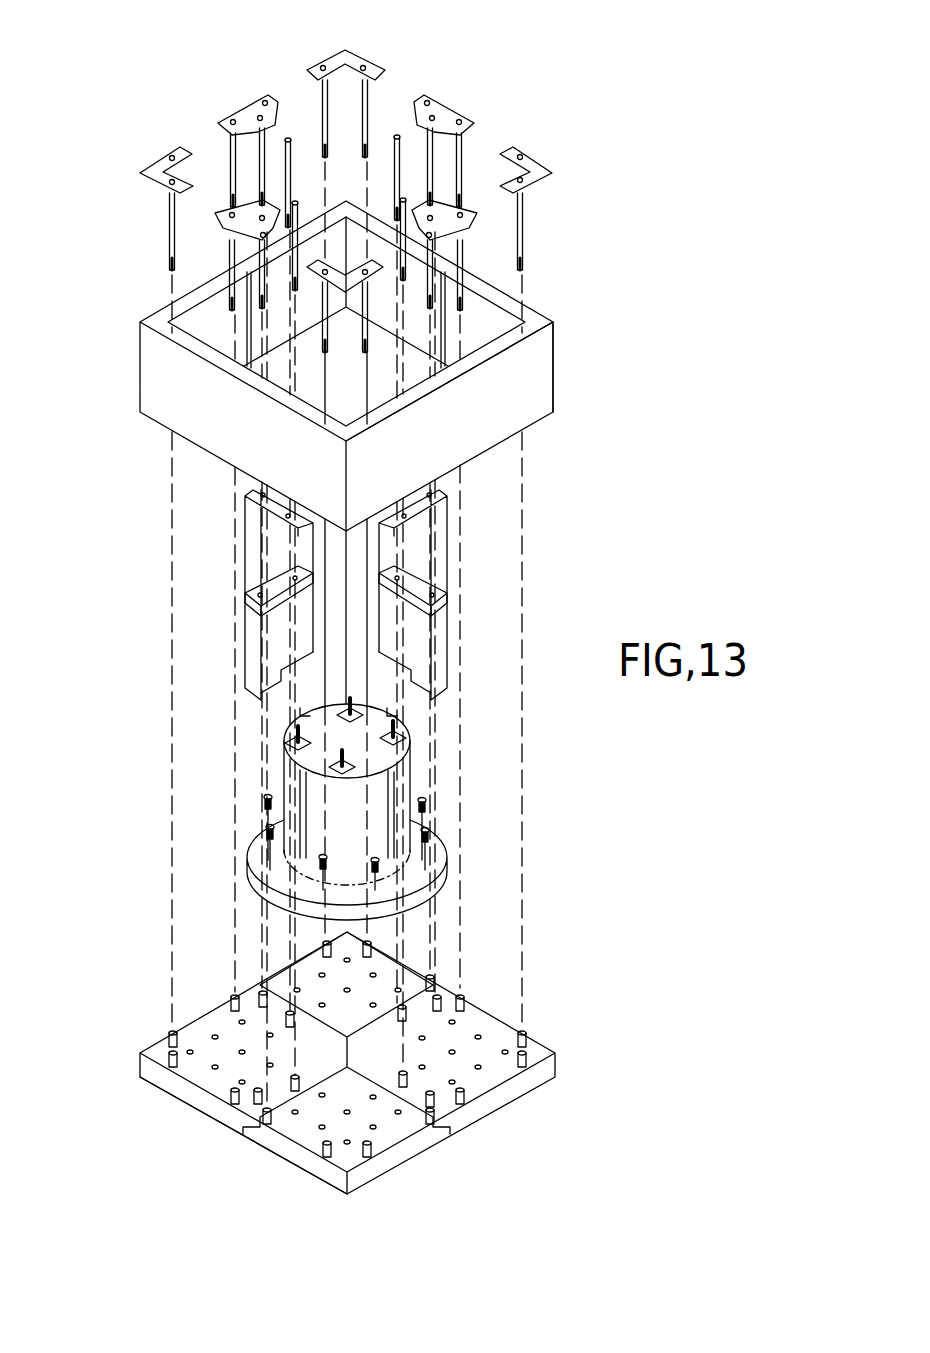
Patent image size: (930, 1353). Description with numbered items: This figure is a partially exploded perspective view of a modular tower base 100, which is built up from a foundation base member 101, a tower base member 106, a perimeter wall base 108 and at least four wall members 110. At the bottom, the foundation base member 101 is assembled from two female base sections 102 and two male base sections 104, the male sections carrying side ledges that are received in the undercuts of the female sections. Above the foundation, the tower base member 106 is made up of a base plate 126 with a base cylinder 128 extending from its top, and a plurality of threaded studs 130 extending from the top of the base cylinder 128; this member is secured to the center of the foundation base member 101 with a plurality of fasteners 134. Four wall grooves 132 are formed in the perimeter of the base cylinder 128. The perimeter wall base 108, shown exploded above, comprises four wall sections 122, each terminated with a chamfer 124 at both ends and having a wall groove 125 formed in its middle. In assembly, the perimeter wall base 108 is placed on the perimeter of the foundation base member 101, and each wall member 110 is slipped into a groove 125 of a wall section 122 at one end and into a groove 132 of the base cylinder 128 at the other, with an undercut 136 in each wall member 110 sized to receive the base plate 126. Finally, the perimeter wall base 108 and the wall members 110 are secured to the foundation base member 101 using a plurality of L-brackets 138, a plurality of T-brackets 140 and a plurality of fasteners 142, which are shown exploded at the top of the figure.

The modular tower base 100 is at (625, 945).
The foundation base member 101 is at (205, 1120).
The female base section 102 is at (512, 1085).
The male base section 104 is at (403, 1153).
The tower base member 106 is at (452, 802).
The perimeter wall base 108 is at (565, 360).
The wall member 110 is at (248, 597).
The wall section 122 is at (507, 403).
The chamfer 124 is at (527, 315).
The wall groove 125 is at (440, 372).
The base plate 126 is at (445, 857).
The base cylinder 128 is at (287, 770).
The threaded stud 130 is at (395, 727).
The wall groove 132 is at (303, 835).
The fastener 134 is at (425, 828).
The undercut 136 is at (300, 652).
The L-bracket 138 is at (527, 157).
The T-bracket 140 is at (450, 107).
The fastener 142 is at (522, 218).